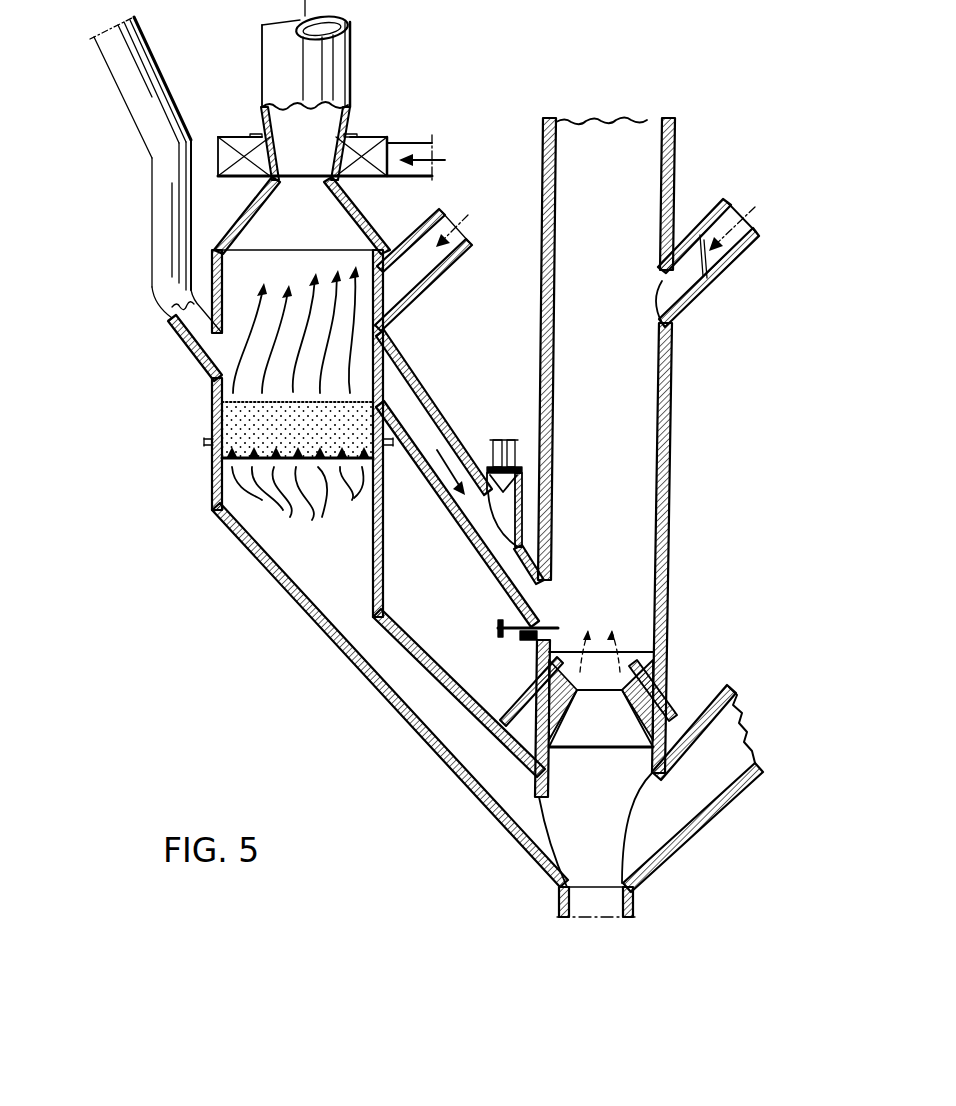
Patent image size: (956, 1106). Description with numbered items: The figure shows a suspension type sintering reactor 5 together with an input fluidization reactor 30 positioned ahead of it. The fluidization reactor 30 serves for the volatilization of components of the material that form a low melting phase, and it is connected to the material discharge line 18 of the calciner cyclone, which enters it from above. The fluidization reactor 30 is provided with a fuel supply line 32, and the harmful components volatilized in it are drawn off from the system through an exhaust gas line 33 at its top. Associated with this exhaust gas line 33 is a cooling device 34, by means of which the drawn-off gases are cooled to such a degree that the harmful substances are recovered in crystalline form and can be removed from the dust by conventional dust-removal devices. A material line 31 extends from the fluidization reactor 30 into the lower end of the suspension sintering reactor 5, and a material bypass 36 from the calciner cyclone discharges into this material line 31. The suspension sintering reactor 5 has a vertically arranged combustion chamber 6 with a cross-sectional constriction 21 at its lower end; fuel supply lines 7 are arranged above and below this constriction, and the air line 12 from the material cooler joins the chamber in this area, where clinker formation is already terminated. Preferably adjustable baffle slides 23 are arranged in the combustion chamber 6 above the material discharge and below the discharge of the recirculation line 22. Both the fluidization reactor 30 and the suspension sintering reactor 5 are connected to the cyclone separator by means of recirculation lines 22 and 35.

The suspension sintering reactor 5 is at (543, 208).
The combustion chamber 6 is at (612, 444).
The fuel supply lines 7 is at (513, 713).
The air line 12 is at (697, 797).
The material discharge line 18 is at (138, 62).
The cross-sectional constriction 21 is at (616, 732).
The recirculation line 22 is at (709, 233).
The baffle slides 23 is at (512, 634).
The fluidization reactor 30 is at (212, 434).
The material line 31 is at (410, 410).
The fuel supply line 32 is at (205, 455).
The exhaust gas line 33 is at (337, 58).
The cooling device 34 is at (365, 145).
The recirculation line 35 is at (433, 262).
The material bypass 36 is at (493, 453).